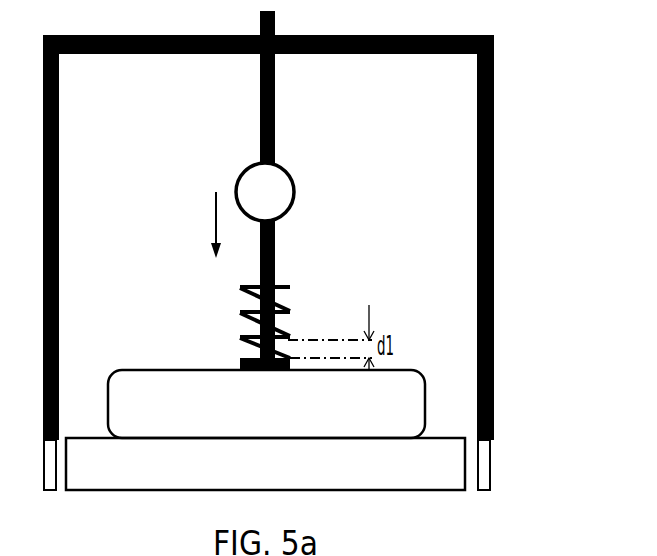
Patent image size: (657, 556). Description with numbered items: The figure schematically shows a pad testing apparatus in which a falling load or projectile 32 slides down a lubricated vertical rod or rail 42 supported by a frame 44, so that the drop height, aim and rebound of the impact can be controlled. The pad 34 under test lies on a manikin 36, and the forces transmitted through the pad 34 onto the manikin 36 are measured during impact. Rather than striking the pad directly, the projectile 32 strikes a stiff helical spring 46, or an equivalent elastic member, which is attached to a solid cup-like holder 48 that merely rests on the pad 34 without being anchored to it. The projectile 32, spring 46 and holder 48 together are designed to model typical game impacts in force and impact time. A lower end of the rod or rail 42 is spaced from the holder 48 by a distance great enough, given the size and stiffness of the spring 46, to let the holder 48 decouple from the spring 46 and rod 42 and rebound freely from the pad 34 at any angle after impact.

The projectile or weight 32 is at (287, 187).
The pad 34 is at (276, 414).
The manikin 36 is at (276, 477).
The rod or rail 42 is at (260, 114).
The frame 44 is at (494, 219).
The helical spring 46 is at (250, 289).
The cup-like holder 48 is at (240, 360).